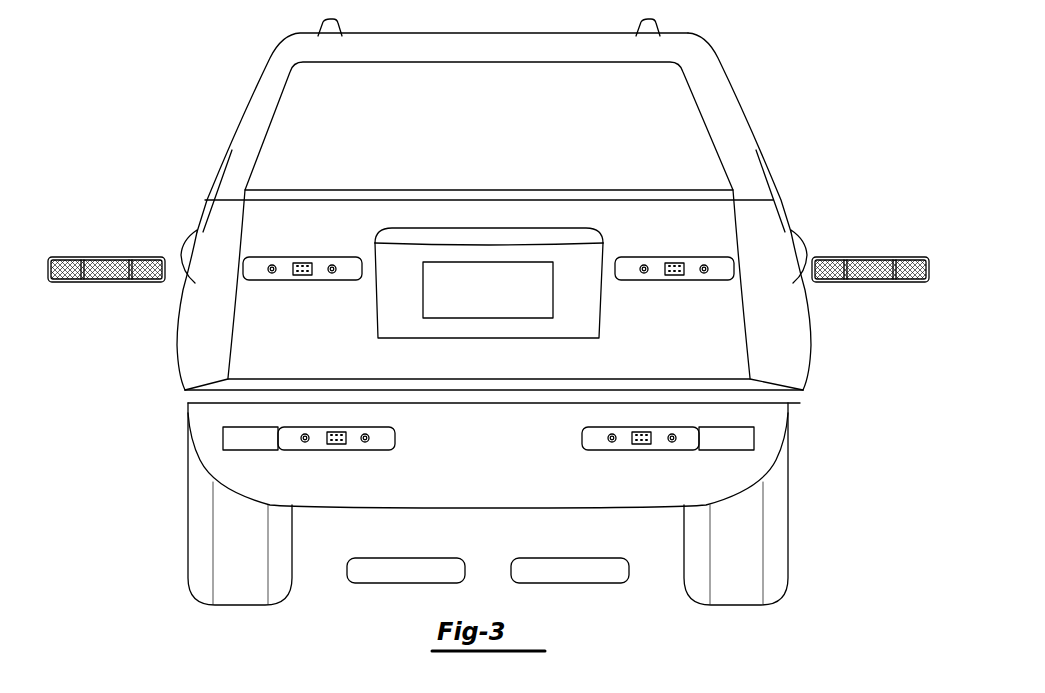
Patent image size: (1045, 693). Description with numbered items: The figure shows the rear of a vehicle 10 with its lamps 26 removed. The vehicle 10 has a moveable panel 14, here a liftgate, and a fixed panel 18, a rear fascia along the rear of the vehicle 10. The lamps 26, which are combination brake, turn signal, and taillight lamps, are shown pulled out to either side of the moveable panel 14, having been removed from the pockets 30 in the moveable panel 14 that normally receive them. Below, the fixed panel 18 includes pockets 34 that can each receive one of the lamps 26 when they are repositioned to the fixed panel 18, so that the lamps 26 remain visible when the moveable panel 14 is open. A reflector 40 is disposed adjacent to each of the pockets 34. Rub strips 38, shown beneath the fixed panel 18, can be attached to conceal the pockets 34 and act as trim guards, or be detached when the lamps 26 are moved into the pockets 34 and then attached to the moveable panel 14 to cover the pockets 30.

The vehicle 10 is at (766, 52).
The moveable panel 14 is at (715, 328).
The fixed panel 18 is at (485, 496).
The lamps 26 is at (280, 240).
The pockets 30 is at (303, 285).
The pockets 34 is at (343, 424).
The rub strip 38 is at (340, 460).
The reflector 40 is at (742, 438).